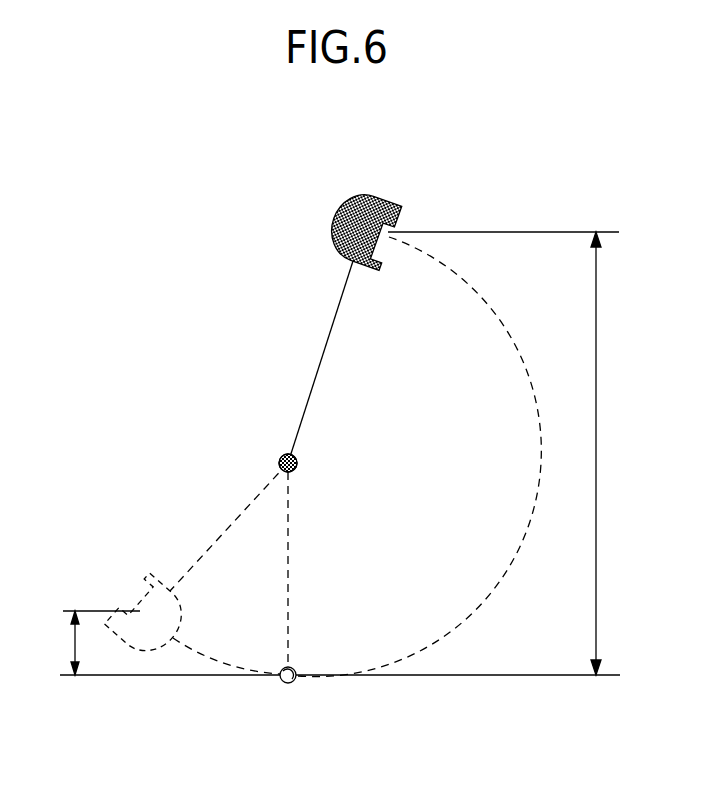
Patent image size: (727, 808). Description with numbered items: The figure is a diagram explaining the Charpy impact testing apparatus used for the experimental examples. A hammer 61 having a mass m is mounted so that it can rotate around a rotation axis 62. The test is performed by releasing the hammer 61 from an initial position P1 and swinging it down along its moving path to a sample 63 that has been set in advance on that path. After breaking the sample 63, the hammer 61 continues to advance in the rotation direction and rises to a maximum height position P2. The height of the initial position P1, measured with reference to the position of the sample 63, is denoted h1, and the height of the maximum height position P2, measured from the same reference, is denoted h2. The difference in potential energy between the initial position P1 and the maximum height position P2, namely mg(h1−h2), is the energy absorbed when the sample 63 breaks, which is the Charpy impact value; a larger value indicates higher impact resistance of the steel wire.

The hammer 61 is at (372, 198).
The rotation axis 62 is at (279, 463).
The sample 63 is at (288, 684).
The initial position P1 is at (418, 210).
The maximum height position P2 is at (131, 596).
The height of the initial position h1 is at (511, 453).
The height of the maximum height position h2 is at (91, 643).